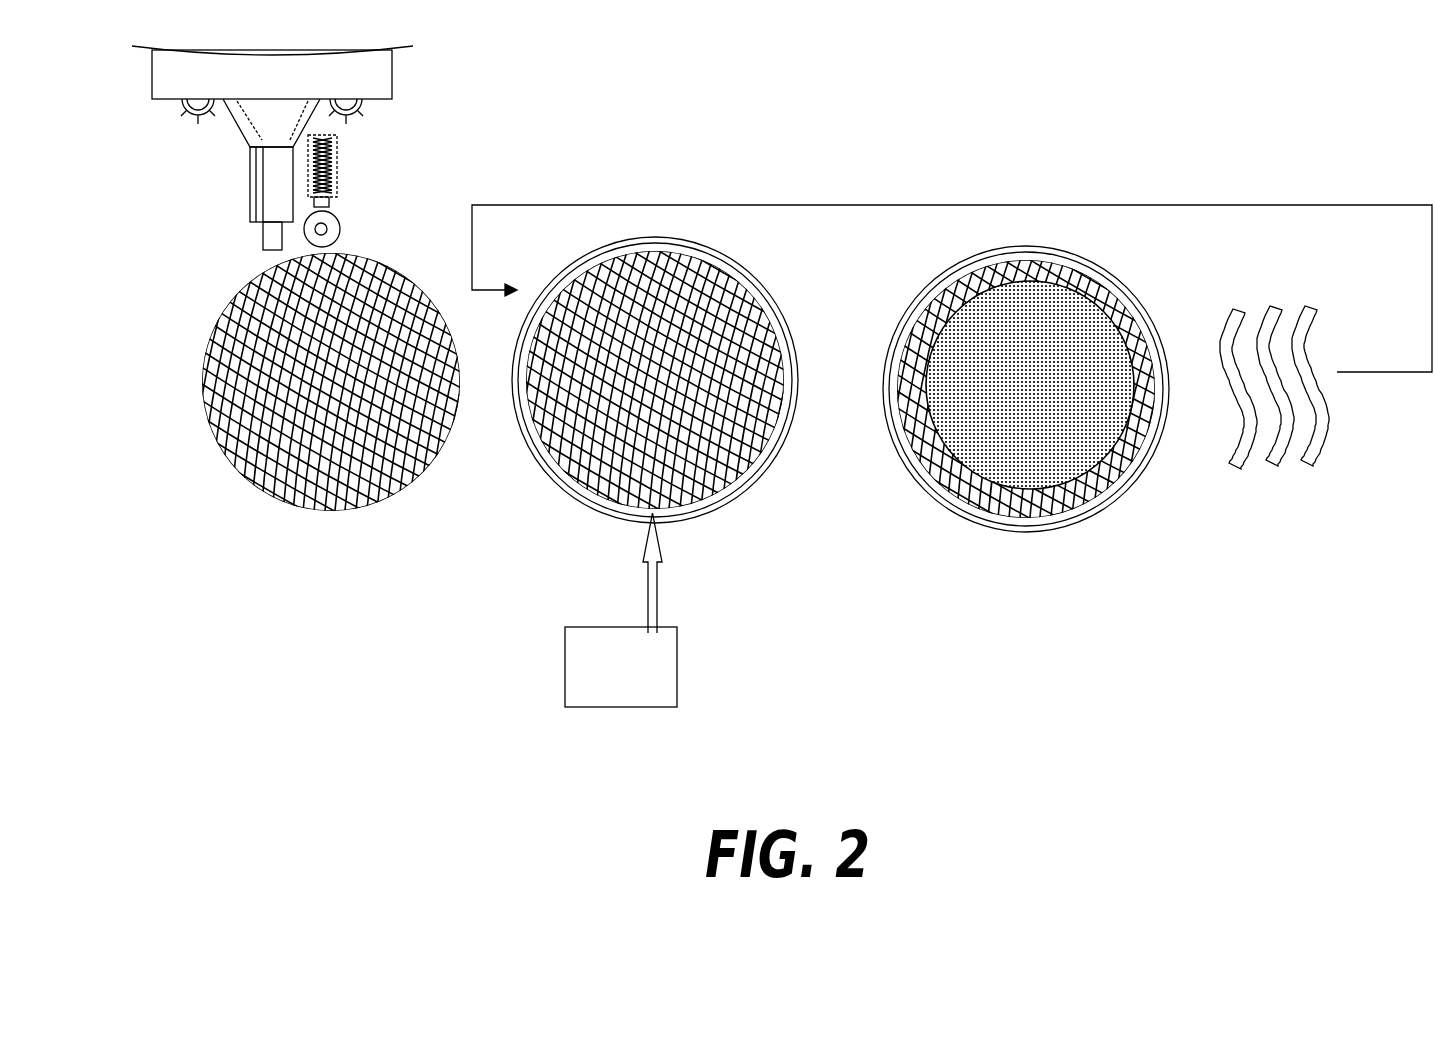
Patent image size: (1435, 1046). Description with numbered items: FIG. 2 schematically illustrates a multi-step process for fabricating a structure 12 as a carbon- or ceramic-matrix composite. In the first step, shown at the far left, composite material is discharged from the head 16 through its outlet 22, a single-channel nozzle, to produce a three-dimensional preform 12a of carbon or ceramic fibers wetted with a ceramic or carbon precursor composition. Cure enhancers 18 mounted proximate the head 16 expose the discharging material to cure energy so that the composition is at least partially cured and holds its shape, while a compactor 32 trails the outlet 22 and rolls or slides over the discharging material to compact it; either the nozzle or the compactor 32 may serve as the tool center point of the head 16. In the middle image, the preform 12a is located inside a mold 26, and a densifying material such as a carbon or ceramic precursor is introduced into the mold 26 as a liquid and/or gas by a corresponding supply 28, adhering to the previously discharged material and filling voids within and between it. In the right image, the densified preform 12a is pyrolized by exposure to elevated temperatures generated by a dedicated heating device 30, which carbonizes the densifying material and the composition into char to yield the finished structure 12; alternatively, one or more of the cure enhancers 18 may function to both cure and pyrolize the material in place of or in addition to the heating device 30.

The structure 12 is at (973, 448).
The preform 12a is at (270, 495).
The head 16 is at (289, 88).
The cure enhancer 18 is at (186, 113).
The outlet 22 is at (262, 248).
The mold 26 is at (572, 498).
The supply 28 is at (635, 677).
The heating device 30 is at (1298, 507).
The compactor 32 is at (338, 218).